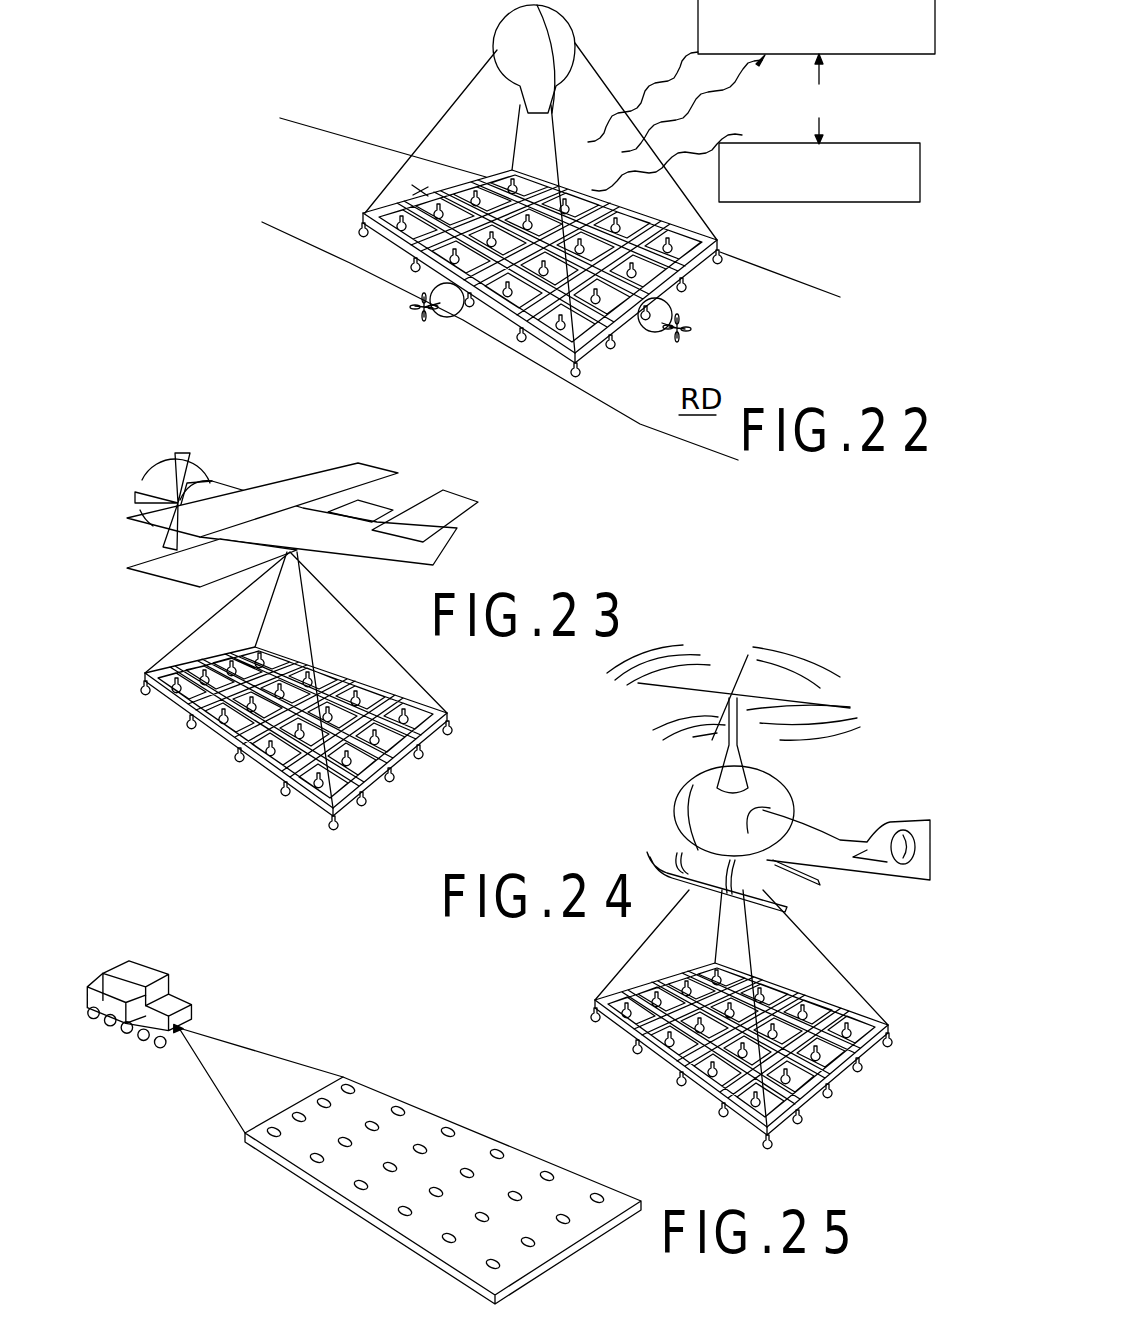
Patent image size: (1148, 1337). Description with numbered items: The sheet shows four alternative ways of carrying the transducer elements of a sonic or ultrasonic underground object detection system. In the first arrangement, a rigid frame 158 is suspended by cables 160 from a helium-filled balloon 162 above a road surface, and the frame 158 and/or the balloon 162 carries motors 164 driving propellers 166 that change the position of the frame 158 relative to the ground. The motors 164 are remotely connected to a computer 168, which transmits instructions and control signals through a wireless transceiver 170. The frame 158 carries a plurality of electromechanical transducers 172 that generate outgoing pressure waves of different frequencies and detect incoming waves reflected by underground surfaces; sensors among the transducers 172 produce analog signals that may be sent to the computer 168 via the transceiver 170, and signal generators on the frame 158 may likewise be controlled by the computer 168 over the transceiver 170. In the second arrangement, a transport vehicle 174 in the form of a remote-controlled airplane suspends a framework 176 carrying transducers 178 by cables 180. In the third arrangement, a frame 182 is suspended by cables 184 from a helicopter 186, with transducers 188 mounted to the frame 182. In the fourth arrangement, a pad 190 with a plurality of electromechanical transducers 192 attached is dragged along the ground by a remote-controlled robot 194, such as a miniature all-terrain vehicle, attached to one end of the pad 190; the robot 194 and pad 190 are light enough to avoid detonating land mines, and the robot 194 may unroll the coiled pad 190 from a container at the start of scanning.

In FIG. 22, the rigid frame 158 is at (695, 284).
In FIG. 22, the cables 160 is at (534, 164).
In FIG. 22, the helium-filled balloon 162 is at (510, 57).
In FIG. 22, the motors 164 is at (468, 303).
In FIG. 22, the propellers 166 is at (408, 308).
In FIG. 22, the computer 168 is at (844, 202).
In FIG. 22, the wireless transceiver 170 is at (855, 56).
In FIG. 22, the electromechanical transducers 172 is at (416, 265).
In FIG. 23, the transport vehicle 174 is at (280, 488).
In FIG. 23, the framework 176 is at (192, 713).
In FIG. 23, the transducers 178 is at (287, 783).
In FIG. 23, the cables 180 is at (200, 613).
In FIG. 24, the frame 182 is at (780, 1120).
In FIG. 24, the cables 184 is at (830, 940).
In FIG. 24, the helicopter 186 is at (777, 792).
In FIG. 24, the transducers 188 is at (840, 1077).
In FIG. 25, the pad 190 is at (368, 1084).
In FIG. 25, the electromechanical transducers 192 is at (458, 1169).
In FIG. 25, the remote-controlled robot 194 is at (155, 966).